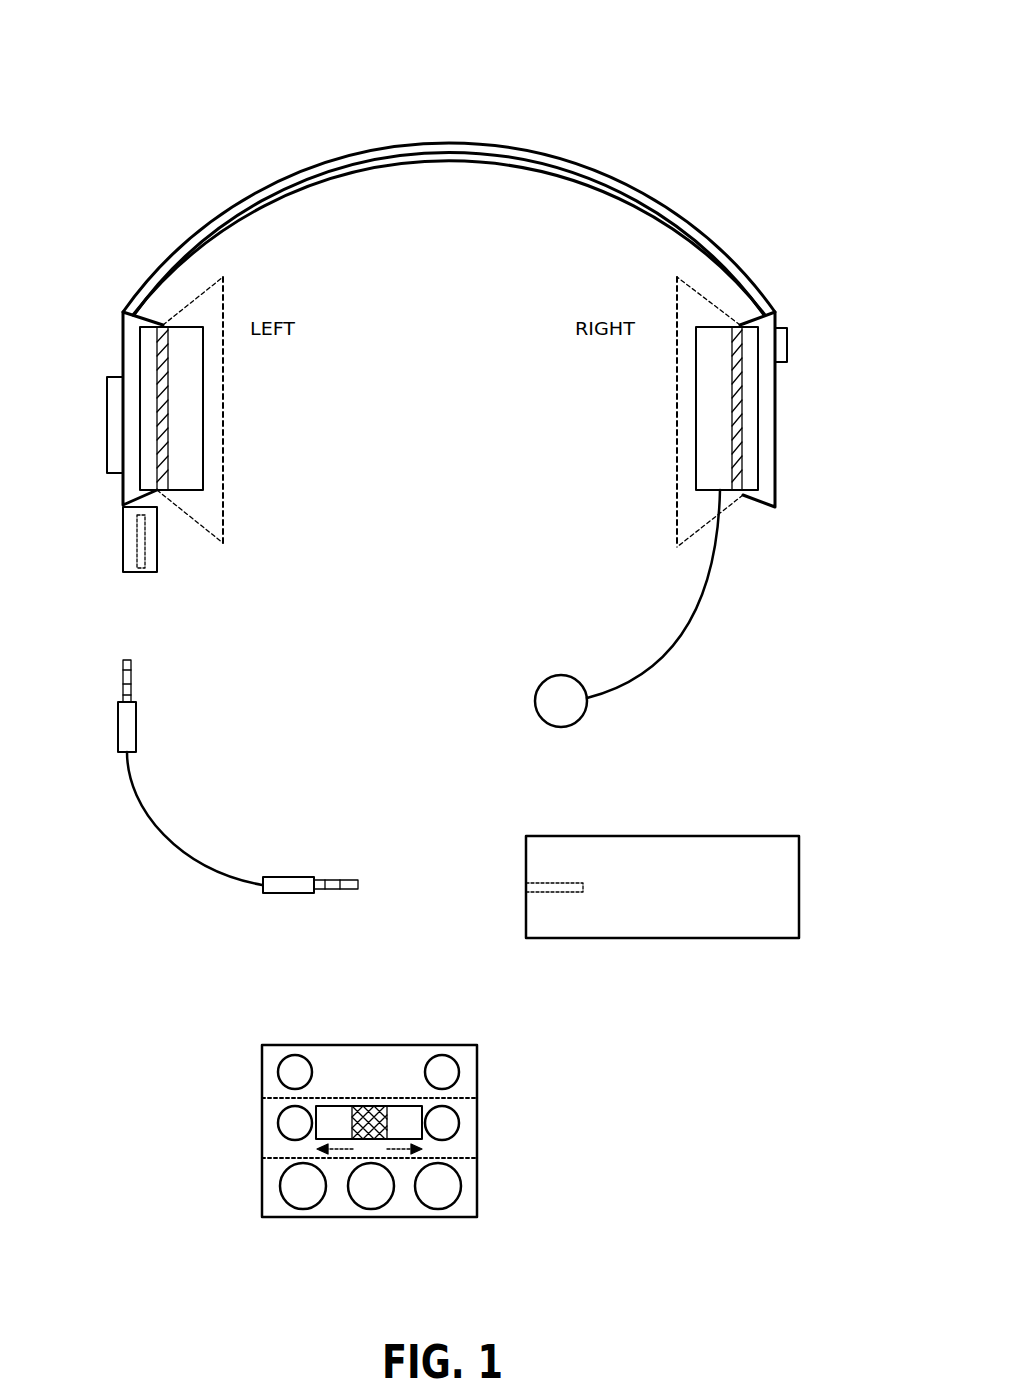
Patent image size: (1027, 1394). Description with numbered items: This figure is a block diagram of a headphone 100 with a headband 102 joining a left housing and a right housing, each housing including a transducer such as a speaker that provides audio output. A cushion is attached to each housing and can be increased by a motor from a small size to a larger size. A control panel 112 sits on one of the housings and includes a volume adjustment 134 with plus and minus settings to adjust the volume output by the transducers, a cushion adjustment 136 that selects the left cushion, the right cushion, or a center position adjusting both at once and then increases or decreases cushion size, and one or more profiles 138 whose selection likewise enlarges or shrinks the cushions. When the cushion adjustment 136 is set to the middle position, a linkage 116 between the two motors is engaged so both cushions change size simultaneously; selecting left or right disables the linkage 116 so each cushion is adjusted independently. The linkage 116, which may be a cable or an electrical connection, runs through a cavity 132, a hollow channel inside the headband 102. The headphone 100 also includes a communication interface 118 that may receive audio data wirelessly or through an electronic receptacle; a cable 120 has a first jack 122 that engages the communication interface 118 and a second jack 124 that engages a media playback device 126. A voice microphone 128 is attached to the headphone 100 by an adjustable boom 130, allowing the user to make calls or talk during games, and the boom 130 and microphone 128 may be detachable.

The headphone 100 is at (79, 36).
The headband 102 is at (449, 214).
The control panel 112 is at (393, 797).
The linkage 116 is at (433, 238).
The communication interface 118 is at (103, 539).
The cable 120 is at (176, 818).
The first jack 122 is at (89, 709).
The second jack 124 is at (310, 908).
The media playback device 126 is at (662, 909).
The voice microphone 128 is at (580, 718).
The adjustable boom 130 is at (663, 594).
The cavity 132 is at (493, 257).
The volume adjustment 134 is at (526, 1066).
The cushion adjustment 136 is at (530, 1126).
The profiles 138 is at (519, 1184).